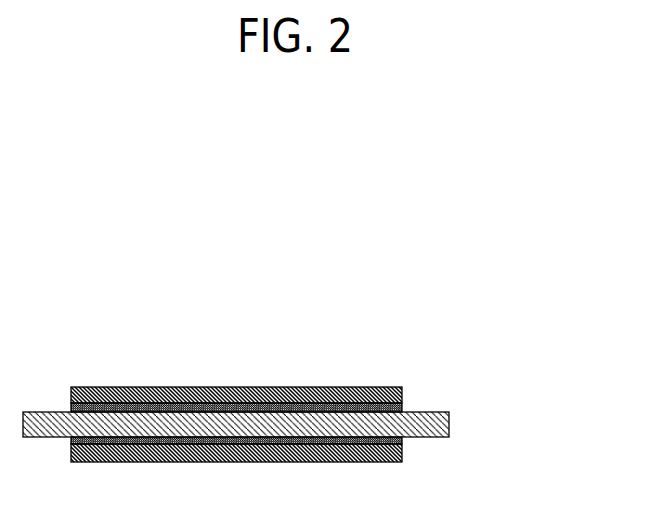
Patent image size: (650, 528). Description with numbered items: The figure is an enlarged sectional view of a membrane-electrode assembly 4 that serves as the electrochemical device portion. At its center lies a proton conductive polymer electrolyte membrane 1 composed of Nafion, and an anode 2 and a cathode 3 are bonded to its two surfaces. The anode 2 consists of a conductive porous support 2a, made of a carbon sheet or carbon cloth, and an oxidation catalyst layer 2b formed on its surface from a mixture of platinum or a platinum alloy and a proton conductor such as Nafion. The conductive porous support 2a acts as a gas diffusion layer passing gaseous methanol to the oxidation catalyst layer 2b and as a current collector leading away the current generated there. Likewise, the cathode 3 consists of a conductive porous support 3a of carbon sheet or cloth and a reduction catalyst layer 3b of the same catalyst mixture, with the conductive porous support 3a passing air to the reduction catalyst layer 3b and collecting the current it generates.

The proton conductive polymer electrolyte membrane 1 is at (449, 425).
The anode 2 is at (322, 468).
The conductive porous support 2a is at (402, 455).
The oxidation catalyst layer 2b is at (402, 441).
The cathode 3 is at (322, 380).
The conductive porous support 3a is at (402, 394).
The reduction catalyst layer 3b is at (402, 408).
The membrane-electrode assembly 4 is at (373, 335).